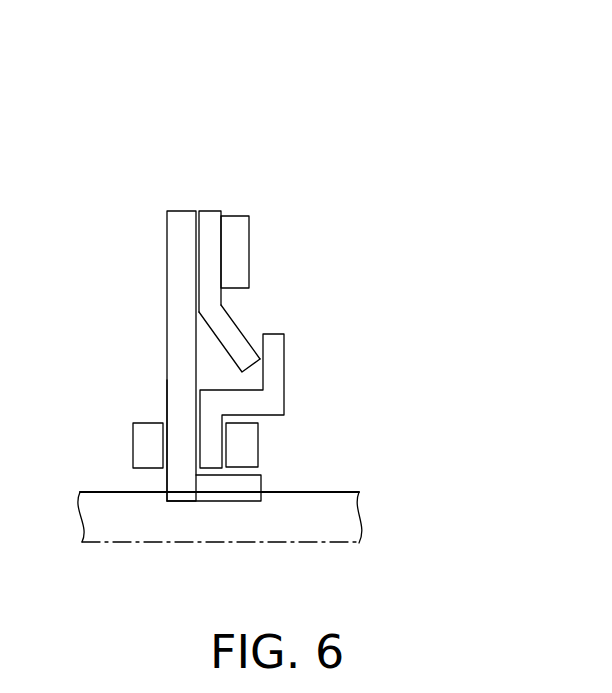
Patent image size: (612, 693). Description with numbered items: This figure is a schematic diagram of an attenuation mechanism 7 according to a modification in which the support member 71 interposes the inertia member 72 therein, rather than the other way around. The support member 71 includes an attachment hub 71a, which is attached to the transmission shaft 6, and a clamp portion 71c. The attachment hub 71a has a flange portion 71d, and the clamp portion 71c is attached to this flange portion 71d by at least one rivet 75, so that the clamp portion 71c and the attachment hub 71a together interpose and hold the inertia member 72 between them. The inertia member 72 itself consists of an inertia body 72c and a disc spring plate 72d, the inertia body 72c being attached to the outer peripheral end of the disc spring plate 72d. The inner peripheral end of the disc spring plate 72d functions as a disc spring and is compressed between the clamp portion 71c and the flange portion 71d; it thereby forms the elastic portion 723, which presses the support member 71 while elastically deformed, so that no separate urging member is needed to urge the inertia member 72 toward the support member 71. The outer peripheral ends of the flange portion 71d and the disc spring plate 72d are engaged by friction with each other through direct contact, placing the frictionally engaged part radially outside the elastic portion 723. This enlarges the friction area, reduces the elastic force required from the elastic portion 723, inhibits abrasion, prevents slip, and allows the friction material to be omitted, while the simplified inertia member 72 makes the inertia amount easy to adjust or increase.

The holding unit 7 is at (307, 157).
The support member 71 is at (148, 348).
The attachment hub 71a is at (166, 405).
The clamp portion 71c is at (284, 390).
The flange portion 71d is at (167, 262).
The inertia member 72 is at (213, 208).
The inertia body 72c is at (249, 243).
The disc spring plate 72d is at (223, 308).
The elastic portion 723 is at (242, 329).
The rivet 75 is at (258, 450).
The transmission shaft 6 is at (350, 523).